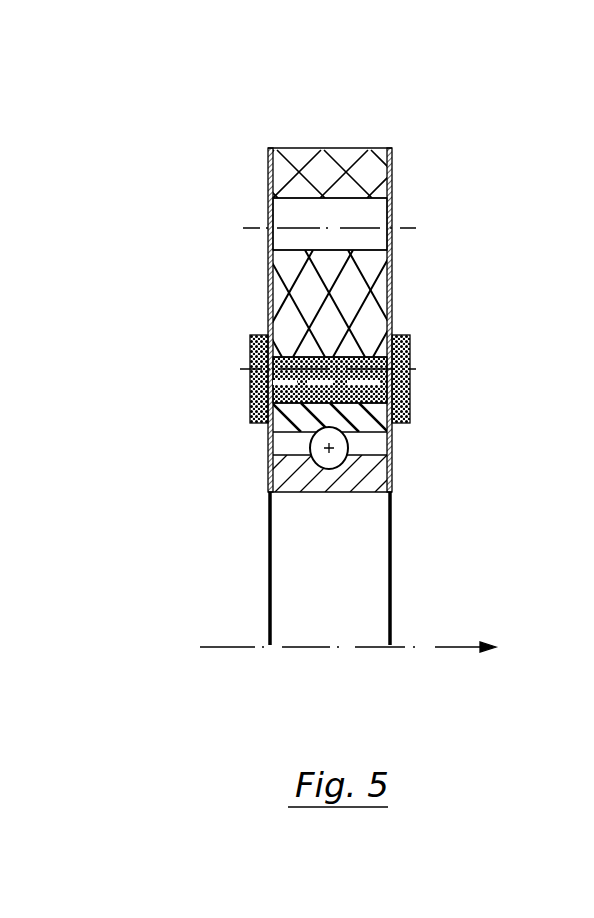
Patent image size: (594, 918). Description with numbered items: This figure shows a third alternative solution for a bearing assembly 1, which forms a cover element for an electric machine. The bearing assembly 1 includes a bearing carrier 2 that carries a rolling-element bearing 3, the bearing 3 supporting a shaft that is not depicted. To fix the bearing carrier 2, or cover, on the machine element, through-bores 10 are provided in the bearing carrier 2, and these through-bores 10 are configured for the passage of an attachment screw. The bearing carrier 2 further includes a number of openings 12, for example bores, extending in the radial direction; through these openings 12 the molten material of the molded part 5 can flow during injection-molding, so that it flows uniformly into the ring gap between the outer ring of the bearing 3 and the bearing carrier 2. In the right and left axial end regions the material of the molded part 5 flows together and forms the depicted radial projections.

The bearing assembly 1 is at (153, 196).
The bearing carrier 2 is at (370, 175).
The through-bores 10 is at (373, 213).
The openings 12 is at (322, 345).
The molded part 5 is at (248, 370).
The rolling-element bearing 3 is at (288, 439).